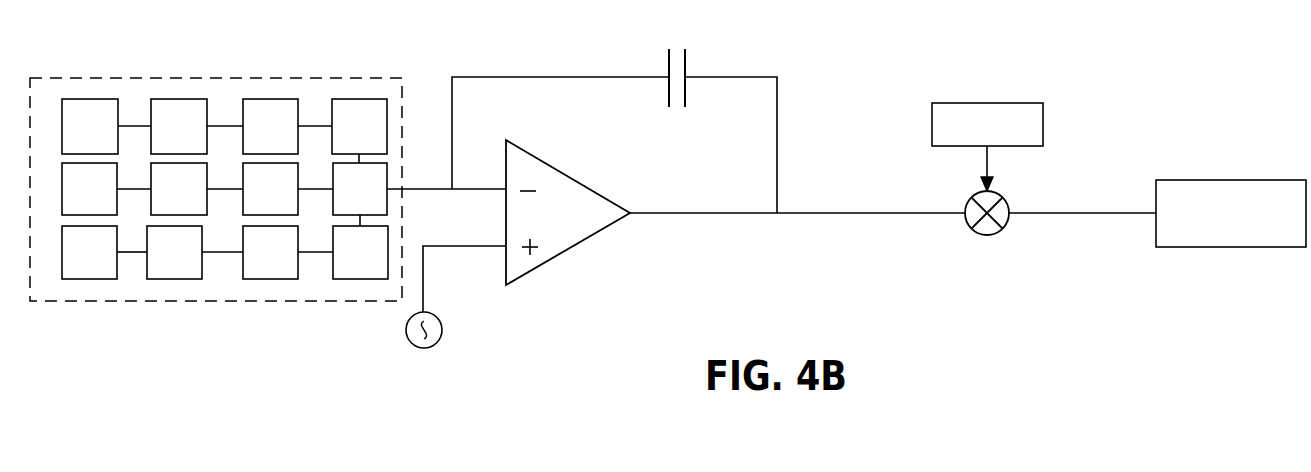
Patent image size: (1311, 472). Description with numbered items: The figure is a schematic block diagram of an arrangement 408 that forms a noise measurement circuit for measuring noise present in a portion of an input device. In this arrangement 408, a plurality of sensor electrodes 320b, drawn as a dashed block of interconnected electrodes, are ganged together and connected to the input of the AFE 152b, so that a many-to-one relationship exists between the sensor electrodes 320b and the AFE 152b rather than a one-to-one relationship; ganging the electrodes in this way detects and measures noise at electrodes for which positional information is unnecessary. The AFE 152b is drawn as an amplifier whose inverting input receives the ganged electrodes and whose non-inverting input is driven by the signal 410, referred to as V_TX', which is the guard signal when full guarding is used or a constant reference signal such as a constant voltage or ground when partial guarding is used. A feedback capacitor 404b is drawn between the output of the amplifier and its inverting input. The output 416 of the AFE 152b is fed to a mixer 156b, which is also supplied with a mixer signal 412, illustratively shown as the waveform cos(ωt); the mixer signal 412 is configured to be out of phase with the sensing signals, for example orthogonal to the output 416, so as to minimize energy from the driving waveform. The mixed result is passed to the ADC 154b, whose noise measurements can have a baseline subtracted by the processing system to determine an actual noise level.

The plurality of sensor electrodes 320b is at (158, 78).
The feedback capacitor 404b is at (687, 60).
The AFE 152b is at (593, 234).
The output of the AFE 416 is at (653, 212).
The signal V_TX' 410 is at (406, 327).
The mixer signal 412 is at (932, 118).
The mixer 156b is at (990, 233).
The ADC 154b is at (1260, 223).
The arrangement 408 is at (1114, 103).